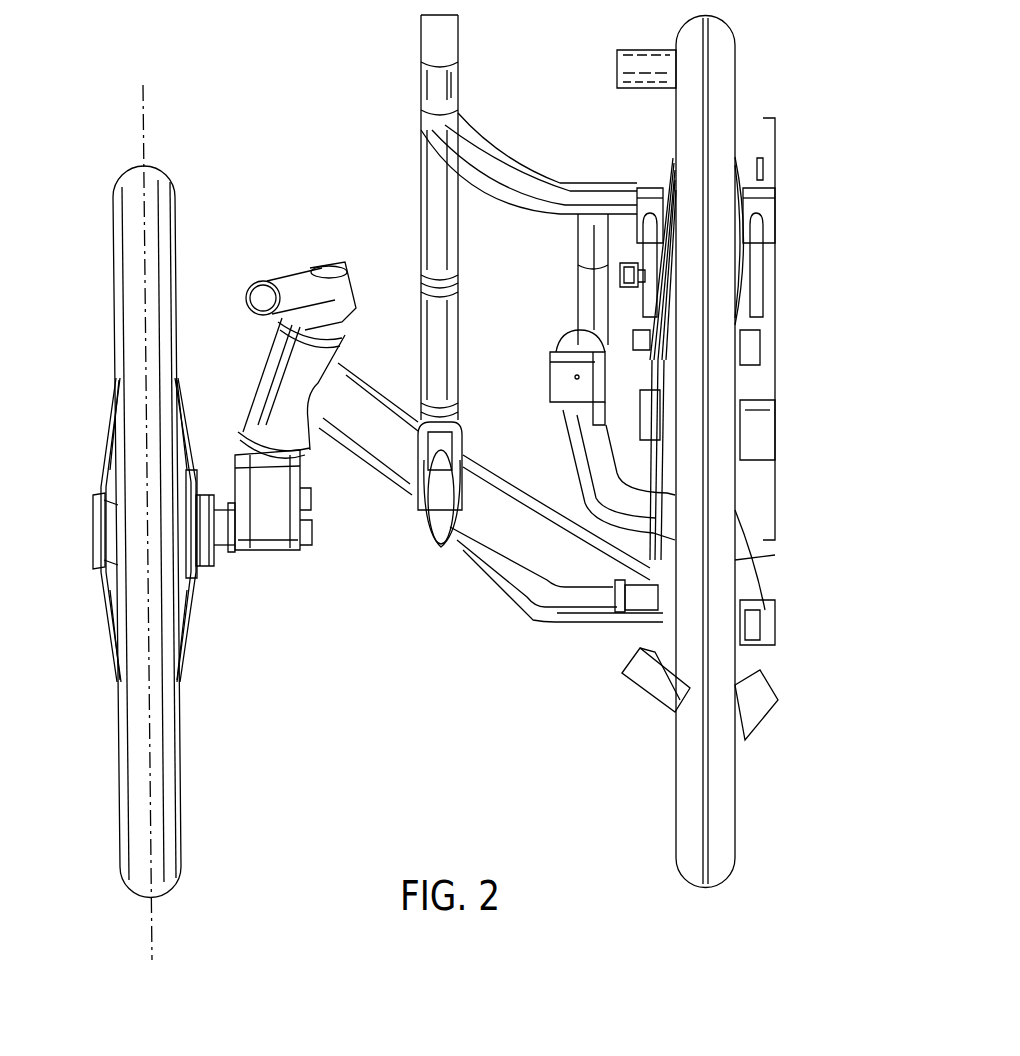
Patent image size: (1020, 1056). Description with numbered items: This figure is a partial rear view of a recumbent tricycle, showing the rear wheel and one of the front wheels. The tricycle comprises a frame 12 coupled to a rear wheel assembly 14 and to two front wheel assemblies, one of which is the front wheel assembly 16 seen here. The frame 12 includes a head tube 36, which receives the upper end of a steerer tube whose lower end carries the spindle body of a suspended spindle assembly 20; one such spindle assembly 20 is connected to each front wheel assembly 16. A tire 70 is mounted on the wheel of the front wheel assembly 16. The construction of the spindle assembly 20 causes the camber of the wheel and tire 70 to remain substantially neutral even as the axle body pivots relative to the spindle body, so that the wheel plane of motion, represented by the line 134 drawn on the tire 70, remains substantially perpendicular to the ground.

The frame 12 is at (480, 85).
The rear wheel assembly 14 is at (672, 797).
The front wheel assembly 16 is at (143, 511).
The suspended spindle assembly 20 is at (300, 570).
The head tube 36 is at (250, 383).
The tire 70 is at (122, 224).
The line representing the wheel plane of motion 134 is at (148, 108).